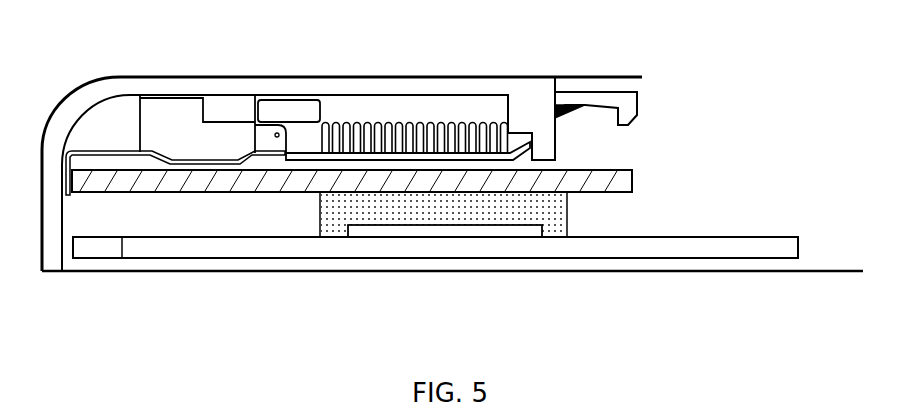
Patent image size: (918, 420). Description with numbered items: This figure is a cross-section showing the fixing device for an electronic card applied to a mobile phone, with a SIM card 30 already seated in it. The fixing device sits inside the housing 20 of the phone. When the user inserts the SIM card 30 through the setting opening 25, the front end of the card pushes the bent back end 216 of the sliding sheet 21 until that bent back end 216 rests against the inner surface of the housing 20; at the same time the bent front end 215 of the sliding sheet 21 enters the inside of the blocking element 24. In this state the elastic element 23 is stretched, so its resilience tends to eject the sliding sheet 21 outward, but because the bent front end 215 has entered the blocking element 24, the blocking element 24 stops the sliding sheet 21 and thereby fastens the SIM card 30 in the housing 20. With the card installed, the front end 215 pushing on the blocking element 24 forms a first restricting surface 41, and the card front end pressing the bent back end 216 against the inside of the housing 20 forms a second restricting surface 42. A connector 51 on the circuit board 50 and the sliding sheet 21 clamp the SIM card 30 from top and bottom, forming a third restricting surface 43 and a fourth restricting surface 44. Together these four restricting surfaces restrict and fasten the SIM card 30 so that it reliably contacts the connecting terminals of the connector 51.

The housing 20 is at (360, 87).
The sliding sheet 21 is at (113, 135).
The elastic element 23 is at (472, 133).
The blocking element 24 is at (630, 110).
The setting opening 25 is at (630, 144).
The SIM card 30 is at (600, 192).
The first restricting surface 41 is at (608, 106).
The second restricting surface 42 is at (66, 157).
The third restricting surface 43 is at (216, 150).
The fourth restricting surface 44 is at (443, 200).
The circuit board 50 is at (758, 248).
The connector 51 is at (335, 230).
The bent front end 215 is at (583, 106).
The bent back end 216 is at (62, 180).